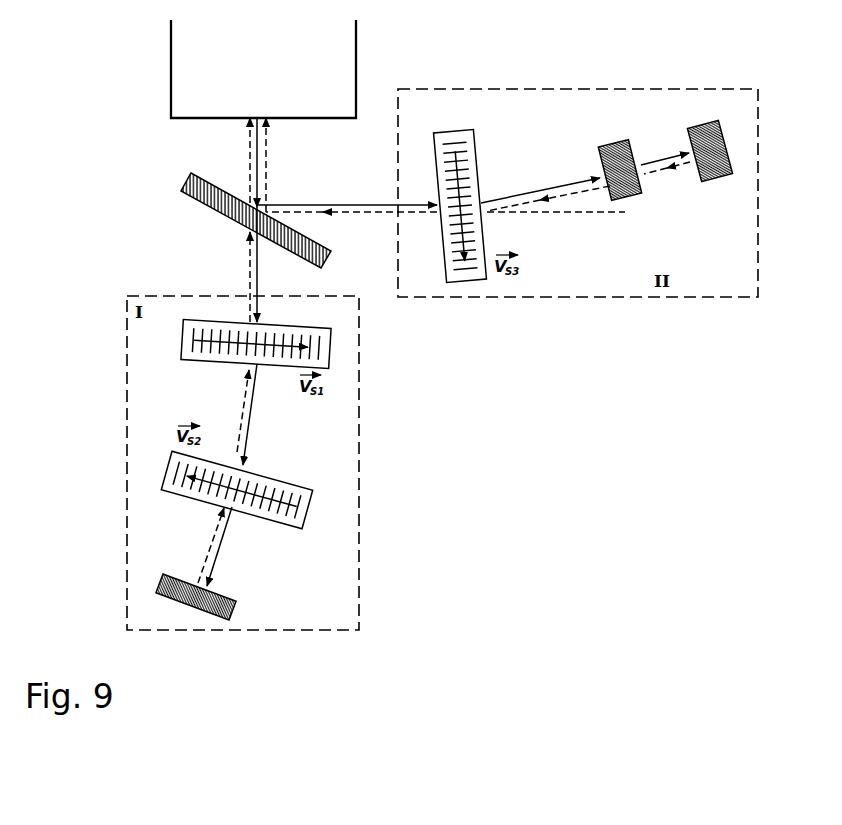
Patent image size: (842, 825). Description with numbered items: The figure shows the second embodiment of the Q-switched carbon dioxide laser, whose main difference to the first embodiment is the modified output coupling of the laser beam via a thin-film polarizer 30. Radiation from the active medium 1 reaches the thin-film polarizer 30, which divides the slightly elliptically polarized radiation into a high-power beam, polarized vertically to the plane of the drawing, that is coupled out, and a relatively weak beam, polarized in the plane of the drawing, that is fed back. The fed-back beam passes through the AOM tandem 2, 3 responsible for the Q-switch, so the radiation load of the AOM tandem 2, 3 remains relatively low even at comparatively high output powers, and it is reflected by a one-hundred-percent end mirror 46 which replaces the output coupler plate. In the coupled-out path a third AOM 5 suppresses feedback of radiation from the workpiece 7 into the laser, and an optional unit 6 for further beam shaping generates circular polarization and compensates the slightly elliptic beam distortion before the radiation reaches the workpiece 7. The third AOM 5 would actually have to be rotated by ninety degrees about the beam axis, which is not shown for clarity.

The measuring object / scale 1 is at (332, 45).
The thin-film polarizer 30 is at (223, 217).
The AOM tandem 2 is at (331, 345).
The AOM tandem 3 is at (315, 500).
The third AOM 5 is at (453, 130).
The unit for further beam shaping 6 is at (605, 145).
The workpiece 7 is at (697, 128).
The 100-% end mirror 46 is at (233, 612).